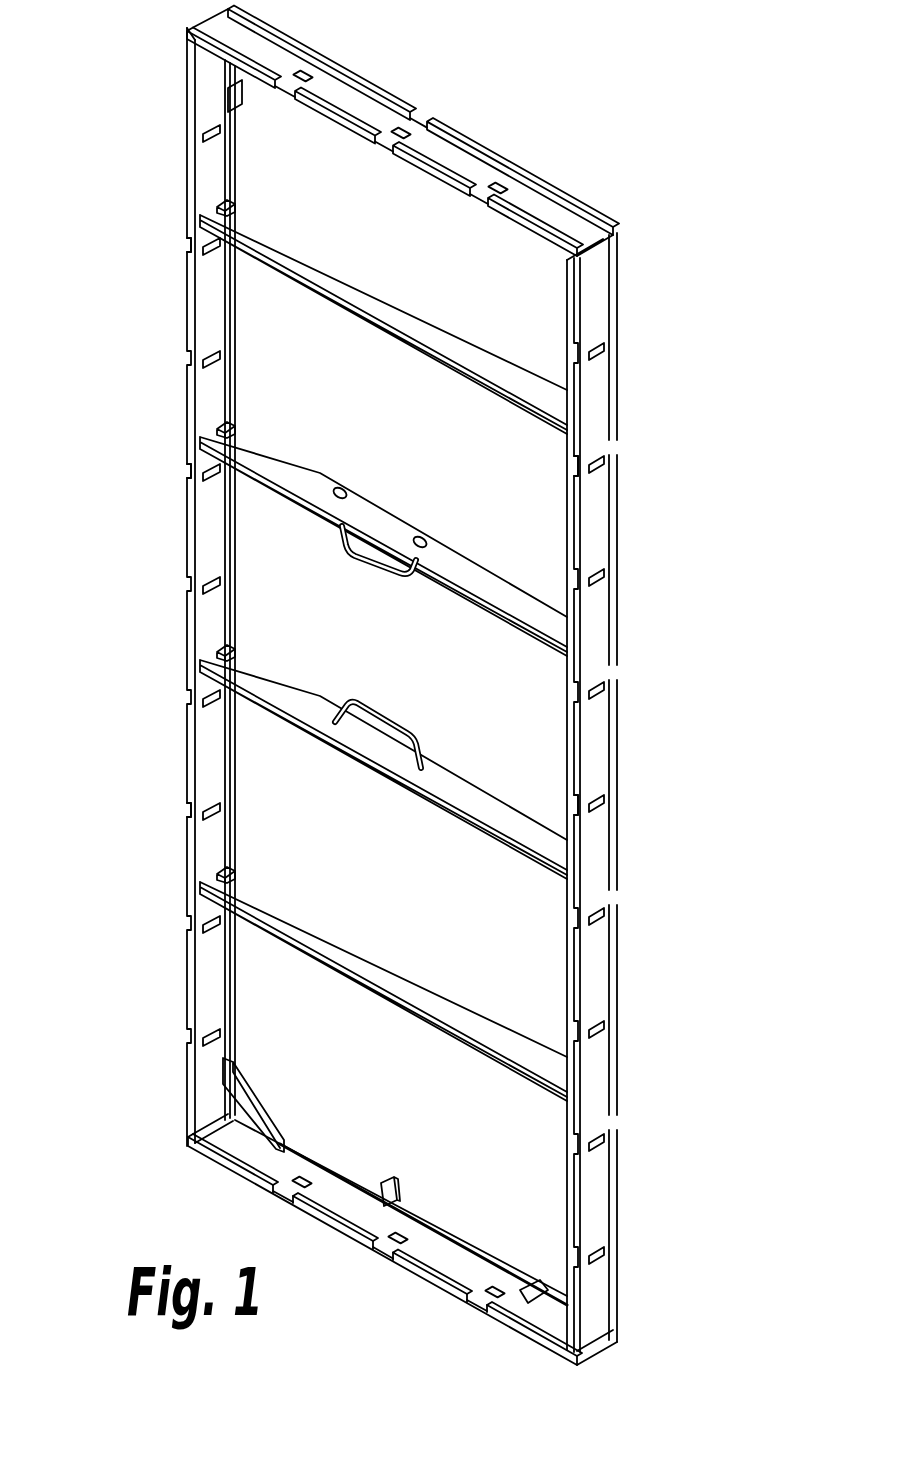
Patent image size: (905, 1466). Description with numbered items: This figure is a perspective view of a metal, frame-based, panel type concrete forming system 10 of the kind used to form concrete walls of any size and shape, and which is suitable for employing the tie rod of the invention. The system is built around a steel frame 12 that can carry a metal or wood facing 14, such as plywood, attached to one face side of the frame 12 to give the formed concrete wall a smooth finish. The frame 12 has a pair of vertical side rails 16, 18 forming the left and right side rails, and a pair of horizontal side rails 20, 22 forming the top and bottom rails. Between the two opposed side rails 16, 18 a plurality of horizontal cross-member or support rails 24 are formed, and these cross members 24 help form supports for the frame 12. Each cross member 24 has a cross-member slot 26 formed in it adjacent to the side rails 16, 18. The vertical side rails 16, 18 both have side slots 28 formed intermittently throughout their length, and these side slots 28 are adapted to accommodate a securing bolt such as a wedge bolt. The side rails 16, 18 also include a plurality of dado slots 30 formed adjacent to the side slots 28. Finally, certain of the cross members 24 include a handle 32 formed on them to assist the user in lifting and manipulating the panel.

The metal concrete forming system 10 is at (628, 82).
The steel frame 12 is at (608, 213).
The facing 14 is at (433, 249).
The vertical side rail 16 is at (187, 583).
The vertical side rail 18 is at (612, 742).
The horizontal side rail 20 is at (377, 87).
The horizontal side rail 22 is at (413, 1275).
The cross-member 24 is at (492, 388).
The cross-member slot 26 is at (232, 205).
The side slot 28 is at (237, 367).
The dado slot 30 is at (187, 241).
The handle 32 is at (367, 556).